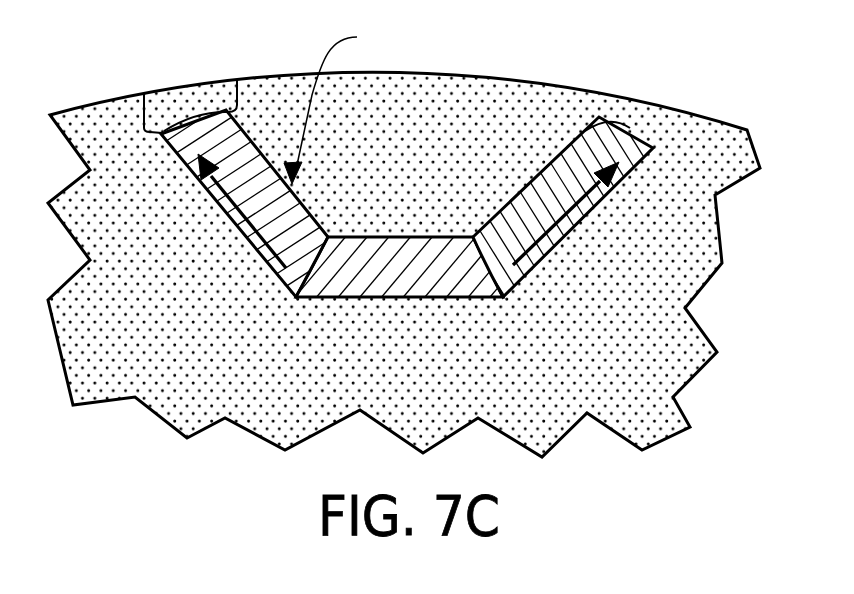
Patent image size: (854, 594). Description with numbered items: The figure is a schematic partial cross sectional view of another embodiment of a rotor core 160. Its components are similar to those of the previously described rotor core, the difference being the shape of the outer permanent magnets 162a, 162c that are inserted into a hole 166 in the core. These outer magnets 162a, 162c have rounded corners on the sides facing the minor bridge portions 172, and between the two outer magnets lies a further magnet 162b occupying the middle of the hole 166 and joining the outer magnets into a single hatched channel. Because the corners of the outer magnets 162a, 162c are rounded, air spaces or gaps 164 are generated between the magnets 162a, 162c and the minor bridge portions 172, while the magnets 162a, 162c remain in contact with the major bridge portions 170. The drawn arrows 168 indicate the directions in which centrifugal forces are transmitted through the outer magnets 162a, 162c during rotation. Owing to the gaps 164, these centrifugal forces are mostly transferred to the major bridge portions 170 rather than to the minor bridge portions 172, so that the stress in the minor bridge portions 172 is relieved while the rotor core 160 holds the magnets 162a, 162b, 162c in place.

The rotor core 160 is at (160, 415).
The outer permanent magnet 162a is at (298, 197).
The second channel segment 162b is at (390, 287).
The outer permanent magnet 162c is at (530, 177).
The gap 164 is at (600, 117).
The hole 166 is at (342, 102).
The arrow 168 is at (240, 243).
The major bridge portion 170 is at (144, 124).
The minor bridge portion 172 is at (237, 90).